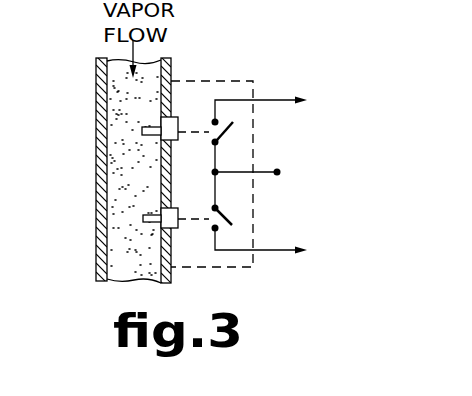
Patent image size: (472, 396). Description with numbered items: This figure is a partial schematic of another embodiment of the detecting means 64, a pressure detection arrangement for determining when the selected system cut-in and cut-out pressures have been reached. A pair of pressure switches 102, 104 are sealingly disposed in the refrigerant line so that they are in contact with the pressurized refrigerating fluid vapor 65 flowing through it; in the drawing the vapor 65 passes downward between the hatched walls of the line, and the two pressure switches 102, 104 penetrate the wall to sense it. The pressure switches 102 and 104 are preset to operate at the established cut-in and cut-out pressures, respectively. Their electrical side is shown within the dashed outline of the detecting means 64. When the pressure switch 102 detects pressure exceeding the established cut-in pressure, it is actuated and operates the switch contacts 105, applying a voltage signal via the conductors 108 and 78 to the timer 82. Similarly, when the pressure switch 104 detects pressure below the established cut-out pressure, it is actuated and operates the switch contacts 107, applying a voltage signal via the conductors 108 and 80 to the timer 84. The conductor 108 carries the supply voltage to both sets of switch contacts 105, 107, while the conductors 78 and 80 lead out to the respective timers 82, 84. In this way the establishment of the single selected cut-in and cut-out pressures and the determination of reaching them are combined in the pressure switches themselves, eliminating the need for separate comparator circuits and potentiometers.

The detecting means 64 is at (186, 80).
The pressurized refrigerating fluid vapor 65 is at (120, 184).
The conductor 78 is at (268, 98).
The conductor 80 is at (279, 253).
The timer 82 is at (366, 86).
The timer 84 is at (366, 238).
The pressure switch 102 is at (156, 127).
The pressure switch 104 is at (154, 222).
The switch contacts 105 is at (242, 133).
The switch contacts 107 is at (242, 214).
The conductor 108 is at (240, 172).